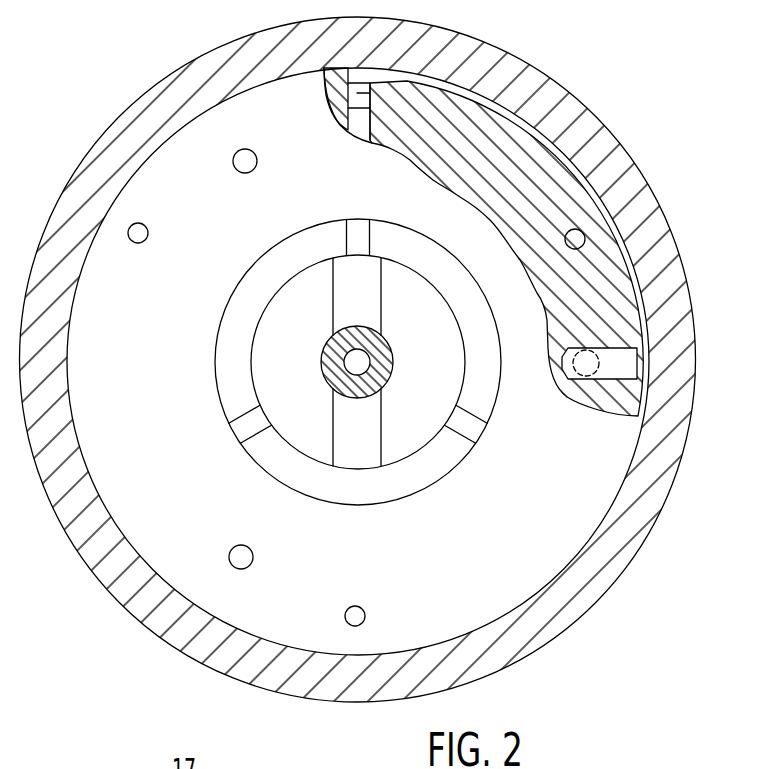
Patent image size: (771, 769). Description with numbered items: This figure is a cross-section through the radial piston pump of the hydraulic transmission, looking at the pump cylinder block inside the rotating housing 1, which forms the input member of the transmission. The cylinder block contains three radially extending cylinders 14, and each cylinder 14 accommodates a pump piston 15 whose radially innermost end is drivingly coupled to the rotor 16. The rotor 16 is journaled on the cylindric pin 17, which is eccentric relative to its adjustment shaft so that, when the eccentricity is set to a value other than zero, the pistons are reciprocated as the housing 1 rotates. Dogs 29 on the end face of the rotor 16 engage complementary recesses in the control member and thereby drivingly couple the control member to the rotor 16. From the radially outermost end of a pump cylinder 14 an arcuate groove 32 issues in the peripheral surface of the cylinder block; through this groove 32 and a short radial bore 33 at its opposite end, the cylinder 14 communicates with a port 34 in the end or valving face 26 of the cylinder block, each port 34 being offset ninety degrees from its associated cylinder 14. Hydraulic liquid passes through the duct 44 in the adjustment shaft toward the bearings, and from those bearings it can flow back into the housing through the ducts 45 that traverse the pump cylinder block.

The housing 1 is at (545, 102).
The cylinder 14 is at (383, 88).
The pump piston 15 is at (360, 235).
The rotor 16 is at (275, 313).
The cylindric pin 17 is at (386, 366).
The end face 26 is at (502, 549).
The dogs 29 is at (365, 307).
The arcuate groove 32 is at (583, 170).
The radial bore 33 is at (617, 365).
The port 34 is at (245, 149).
The duct 44 is at (350, 358).
The ducts 45 is at (148, 232).